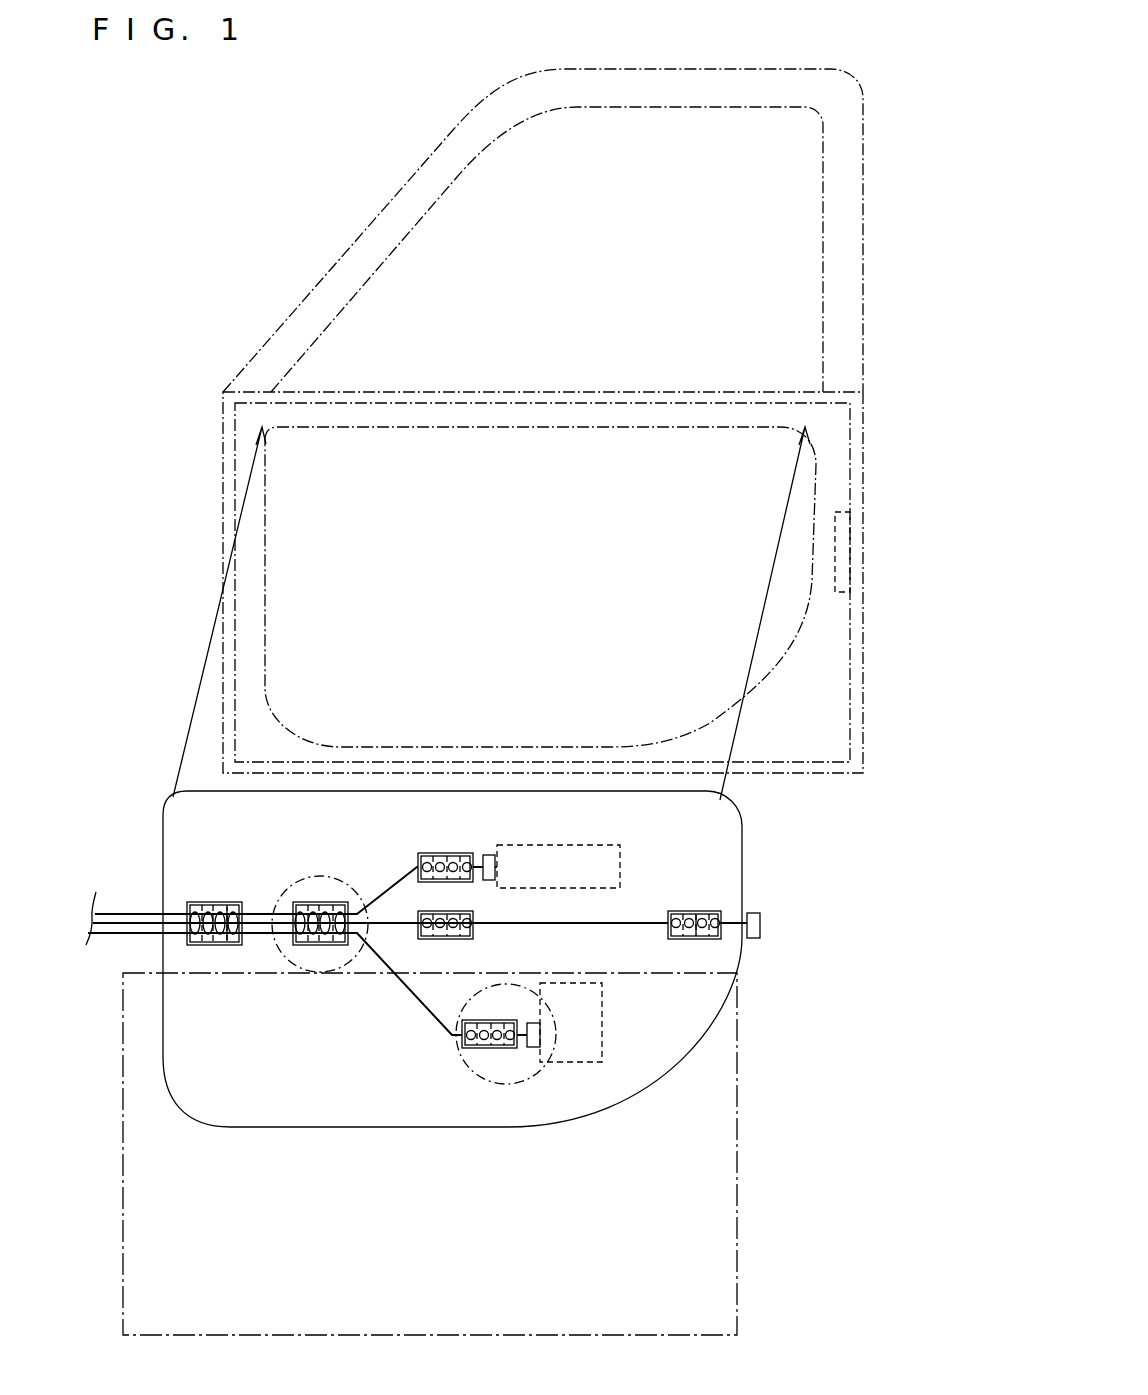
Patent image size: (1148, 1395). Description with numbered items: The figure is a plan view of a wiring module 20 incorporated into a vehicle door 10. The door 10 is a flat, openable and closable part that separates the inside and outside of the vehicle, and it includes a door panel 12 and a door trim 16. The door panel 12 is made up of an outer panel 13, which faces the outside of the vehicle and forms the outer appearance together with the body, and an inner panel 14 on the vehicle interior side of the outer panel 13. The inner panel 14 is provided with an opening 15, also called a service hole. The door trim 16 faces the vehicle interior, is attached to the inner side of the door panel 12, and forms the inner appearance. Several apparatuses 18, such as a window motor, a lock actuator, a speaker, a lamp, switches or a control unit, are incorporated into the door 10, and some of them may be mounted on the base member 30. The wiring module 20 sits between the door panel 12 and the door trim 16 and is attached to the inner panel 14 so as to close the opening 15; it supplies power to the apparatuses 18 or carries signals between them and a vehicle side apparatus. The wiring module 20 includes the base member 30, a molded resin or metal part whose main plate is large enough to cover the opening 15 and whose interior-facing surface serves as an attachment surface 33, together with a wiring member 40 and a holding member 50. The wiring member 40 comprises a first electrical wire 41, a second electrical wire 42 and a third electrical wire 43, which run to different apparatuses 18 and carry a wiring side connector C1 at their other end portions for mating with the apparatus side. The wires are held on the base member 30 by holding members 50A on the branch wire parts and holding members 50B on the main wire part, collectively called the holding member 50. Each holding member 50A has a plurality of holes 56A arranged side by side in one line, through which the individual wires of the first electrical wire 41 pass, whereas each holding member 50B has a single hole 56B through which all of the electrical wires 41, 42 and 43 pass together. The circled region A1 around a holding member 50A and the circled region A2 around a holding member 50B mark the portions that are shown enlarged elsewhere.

The door 10 is at (242, 165).
The door panel 12 is at (913, 435).
The outer panel 13 is at (862, 451).
The inner panel 14 is at (850, 487).
The opening 15 is at (762, 676).
The door trim 16 is at (737, 1160).
The apparatus 18 is at (837, 592).
The wiring module 20 is at (157, 770).
The base member 30 is at (742, 842).
The attachment surface 33 is at (723, 818).
The wiring member 40 is at (124, 900).
The first electrical wire 41 is at (413, 998).
The second electrical wire 42 is at (532, 923).
The third electrical wire 43 is at (382, 898).
The holding member 50 is at (447, 967).
The holding member 50A is at (435, 853).
The holding member 50B is at (202, 902).
The holes 56A is at (698, 912).
The hole 56B is at (232, 903).
The region A1 is at (462, 1065).
The region A2 is at (283, 960).
The wiring side connector C1 is at (490, 855).